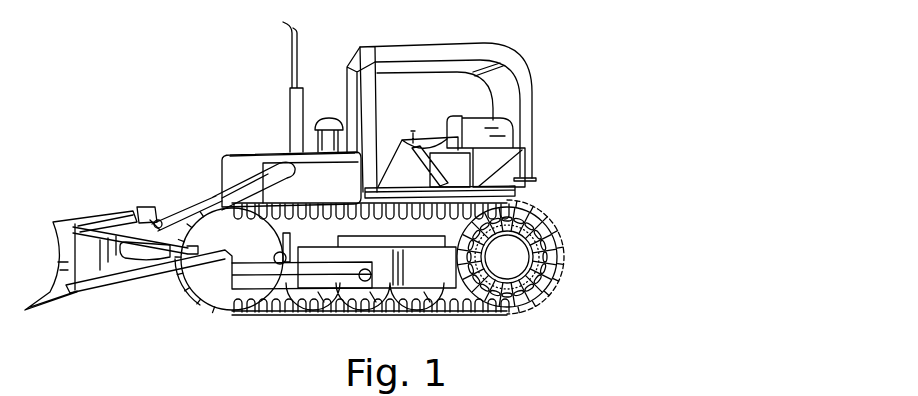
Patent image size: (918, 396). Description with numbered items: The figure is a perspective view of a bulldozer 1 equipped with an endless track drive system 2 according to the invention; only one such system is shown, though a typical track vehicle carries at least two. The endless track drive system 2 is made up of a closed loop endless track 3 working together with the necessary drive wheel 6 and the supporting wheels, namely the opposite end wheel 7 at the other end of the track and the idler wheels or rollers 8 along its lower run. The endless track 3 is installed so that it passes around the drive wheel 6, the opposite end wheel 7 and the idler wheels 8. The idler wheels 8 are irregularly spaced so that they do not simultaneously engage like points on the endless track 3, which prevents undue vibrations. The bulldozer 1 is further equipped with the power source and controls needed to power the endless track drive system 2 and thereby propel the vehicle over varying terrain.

The bulldozer 1 is at (343, 126).
The endless track drive system 2 is at (552, 286).
The closed loop endless track 3 is at (458, 312).
The drive wheel 6 is at (546, 224).
The opposite end wheel 7 is at (208, 290).
The idler wheels or rollers 8 is at (405, 311).